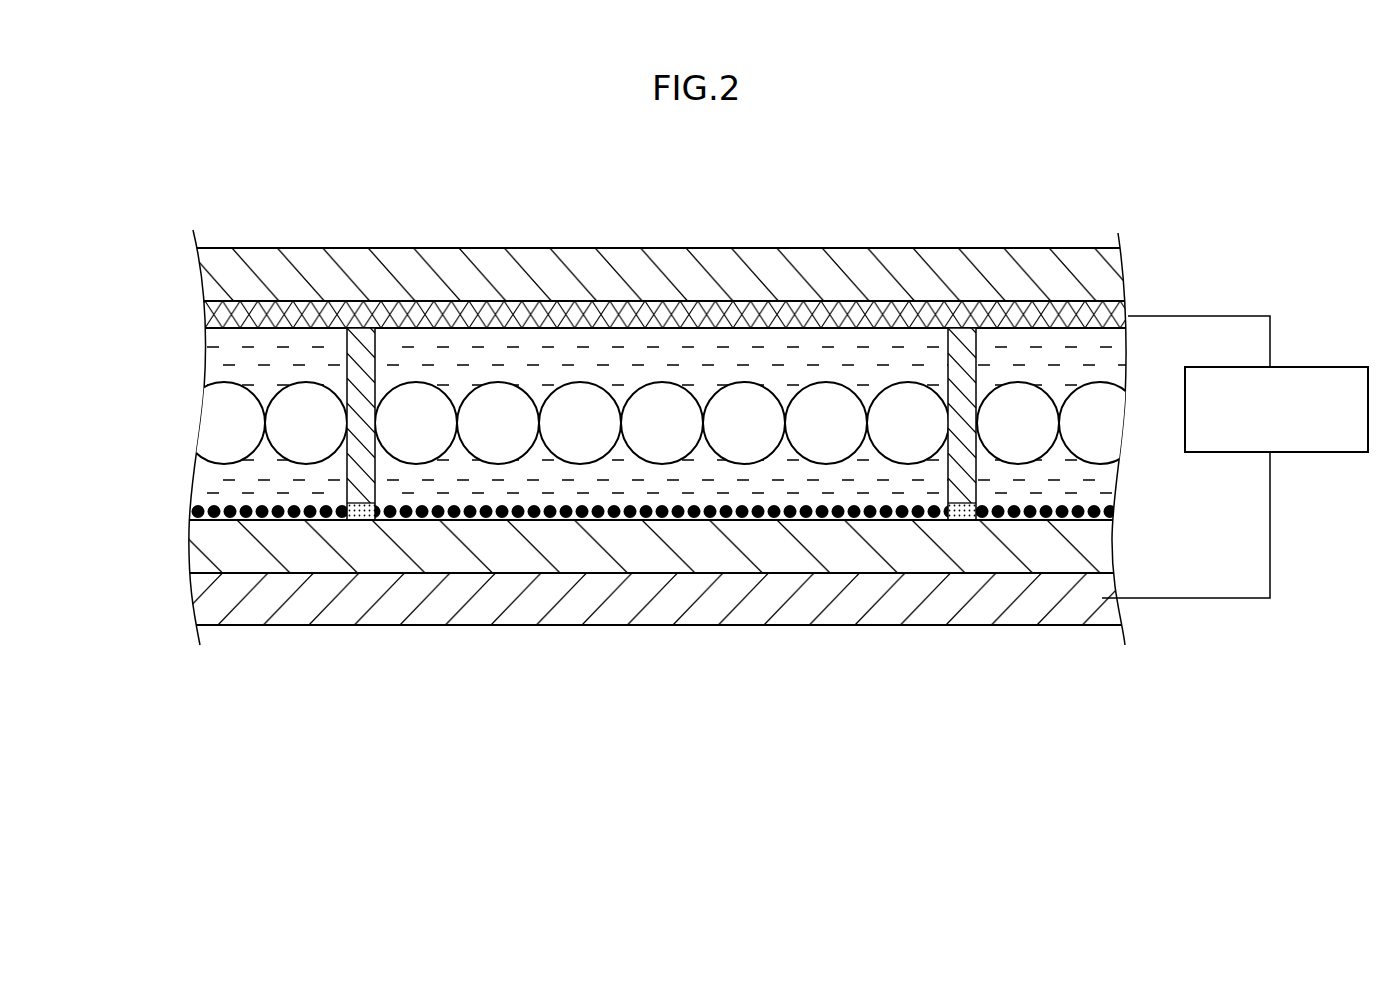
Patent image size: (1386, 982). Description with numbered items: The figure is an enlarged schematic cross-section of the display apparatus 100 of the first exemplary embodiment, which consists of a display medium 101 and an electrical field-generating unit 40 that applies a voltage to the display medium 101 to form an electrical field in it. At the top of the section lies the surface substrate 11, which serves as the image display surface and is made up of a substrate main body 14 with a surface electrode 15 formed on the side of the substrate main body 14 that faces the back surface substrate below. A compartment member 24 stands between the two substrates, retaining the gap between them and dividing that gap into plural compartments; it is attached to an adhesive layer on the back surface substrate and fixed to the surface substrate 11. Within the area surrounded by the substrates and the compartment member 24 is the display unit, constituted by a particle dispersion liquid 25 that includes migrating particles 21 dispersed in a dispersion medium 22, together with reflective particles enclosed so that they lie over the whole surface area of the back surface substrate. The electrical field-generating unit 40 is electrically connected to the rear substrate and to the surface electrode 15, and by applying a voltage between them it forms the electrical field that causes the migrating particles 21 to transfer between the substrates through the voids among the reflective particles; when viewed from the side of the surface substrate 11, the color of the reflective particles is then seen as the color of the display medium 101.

The display apparatus 100 is at (1257, 213).
The display medium 101 is at (1022, 177).
The surface substrate 11 is at (1182, 238).
The substrate main body 14 is at (1103, 277).
The surface electrode 15 is at (1087, 310).
The compartment member 24 is at (350, 352).
The particle dispersion liquid 25 is at (141, 450).
The dispersion medium 22 is at (380, 470).
The migrating particles 21 is at (237, 505).
The electrical field-generating unit 40 is at (1305, 367).